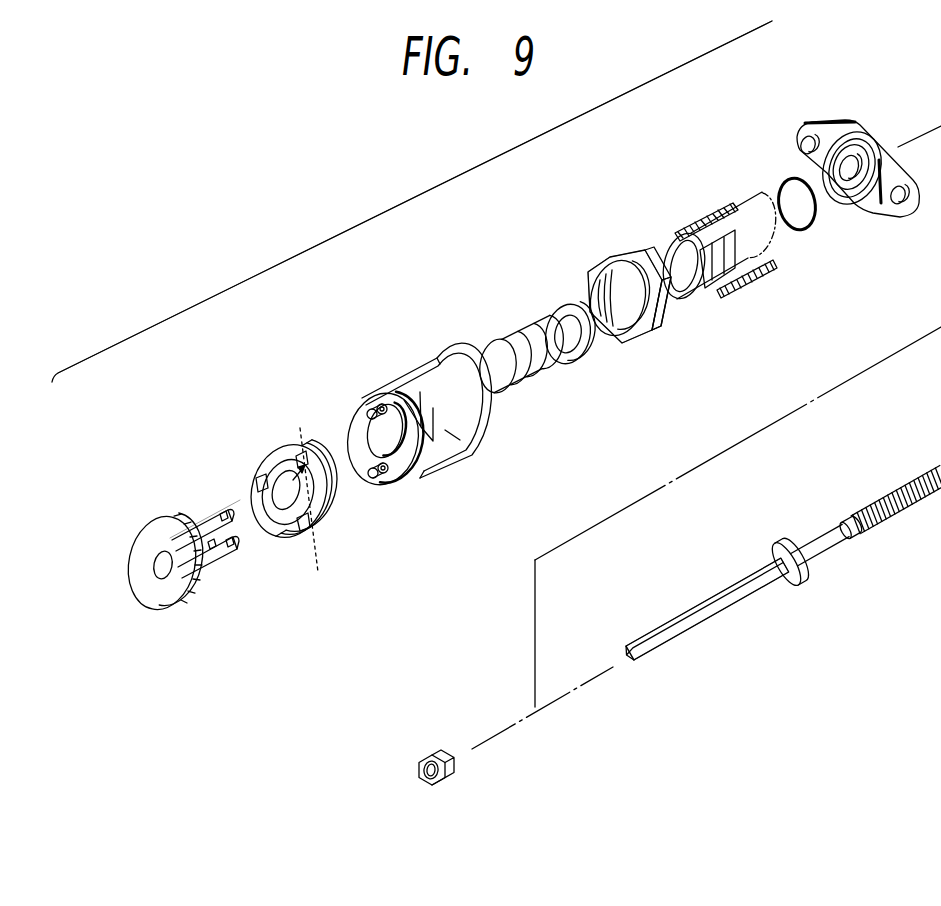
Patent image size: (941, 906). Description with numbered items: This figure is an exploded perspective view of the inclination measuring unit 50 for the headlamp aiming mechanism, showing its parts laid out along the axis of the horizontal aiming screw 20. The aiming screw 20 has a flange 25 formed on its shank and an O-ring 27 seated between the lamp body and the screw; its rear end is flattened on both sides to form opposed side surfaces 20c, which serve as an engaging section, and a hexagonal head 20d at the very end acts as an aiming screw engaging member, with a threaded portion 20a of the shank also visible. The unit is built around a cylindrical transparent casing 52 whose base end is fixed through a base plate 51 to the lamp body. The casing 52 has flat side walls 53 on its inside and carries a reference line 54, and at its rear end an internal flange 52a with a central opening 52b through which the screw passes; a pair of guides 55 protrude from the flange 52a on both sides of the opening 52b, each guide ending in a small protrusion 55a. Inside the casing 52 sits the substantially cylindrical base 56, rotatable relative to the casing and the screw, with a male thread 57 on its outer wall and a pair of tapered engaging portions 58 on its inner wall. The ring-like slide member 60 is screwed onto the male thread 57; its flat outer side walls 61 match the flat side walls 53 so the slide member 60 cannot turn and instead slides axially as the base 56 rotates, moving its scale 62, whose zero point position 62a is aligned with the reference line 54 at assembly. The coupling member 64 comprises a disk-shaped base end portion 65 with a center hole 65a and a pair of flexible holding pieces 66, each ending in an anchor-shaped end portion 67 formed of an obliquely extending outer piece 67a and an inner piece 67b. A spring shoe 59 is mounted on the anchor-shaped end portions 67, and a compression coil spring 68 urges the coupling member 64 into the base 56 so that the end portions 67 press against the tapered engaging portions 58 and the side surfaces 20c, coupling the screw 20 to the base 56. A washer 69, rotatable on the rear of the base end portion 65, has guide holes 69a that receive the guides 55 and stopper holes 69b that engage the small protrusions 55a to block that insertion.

The horizontal aiming screw 20 is at (735, 710).
The threaded portion 20a is at (870, 503).
The side surfaces 20c is at (760, 600).
The hexagonal head 20d is at (462, 777).
The flange 25 is at (800, 580).
The O-ring 27 is at (813, 232).
The inclination measuring unit 50 is at (399, 204).
The base plate 51 is at (848, 121).
The transparent casing 52 is at (412, 358).
The internal flange 52a is at (415, 465).
The opening 52b is at (366, 420).
The flat side walls 53 is at (449, 352).
The reference line 54 is at (467, 445).
The guides 55 is at (372, 410).
The small protrusions 55a is at (368, 402).
The base 56 is at (735, 194).
The male thread 57 is at (727, 290).
The tapered engaging portions 58 is at (705, 204).
The spring shoe 59 is at (588, 350).
The slide member 60 is at (617, 262).
The flat outer side walls 61 is at (590, 290).
The scale 62 is at (607, 258).
The zero point position 62a is at (661, 292).
The coupling member 64 is at (128, 512).
The disk-shaped base end portion 65 is at (178, 602).
The center hole 65a is at (160, 580).
The flexible holding pieces 66 is at (200, 530).
The anchor-shaped end portions 67 is at (300, 656).
The outer piece 67a is at (222, 514).
The inner piece 67b is at (238, 546).
The compression coil spring 68 is at (500, 342).
The washer 69 is at (272, 432).
The guide holes 69a is at (258, 478).
The stopper holes 69b is at (314, 493).